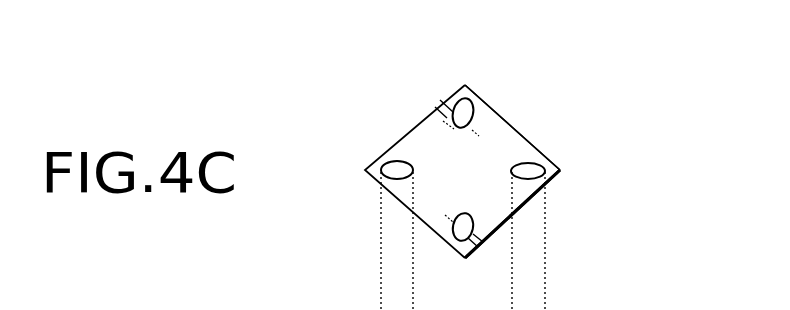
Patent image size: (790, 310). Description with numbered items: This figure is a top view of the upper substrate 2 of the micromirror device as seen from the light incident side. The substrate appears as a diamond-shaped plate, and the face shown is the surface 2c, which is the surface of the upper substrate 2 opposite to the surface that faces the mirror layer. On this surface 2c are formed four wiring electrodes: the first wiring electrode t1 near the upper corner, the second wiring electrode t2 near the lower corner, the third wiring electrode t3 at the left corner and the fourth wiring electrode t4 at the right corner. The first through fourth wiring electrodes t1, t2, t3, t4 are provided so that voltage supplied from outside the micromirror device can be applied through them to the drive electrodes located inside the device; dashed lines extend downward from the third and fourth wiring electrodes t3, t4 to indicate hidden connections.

The upper substrate 2 is at (369, 207).
The surface of the upper substrate 2c is at (502, 137).
The first wiring electrode t1 is at (450, 100).
The second wiring electrode t2 is at (472, 252).
The third wiring electrode t3 is at (384, 162).
The fourth wiring electrode t4 is at (530, 178).